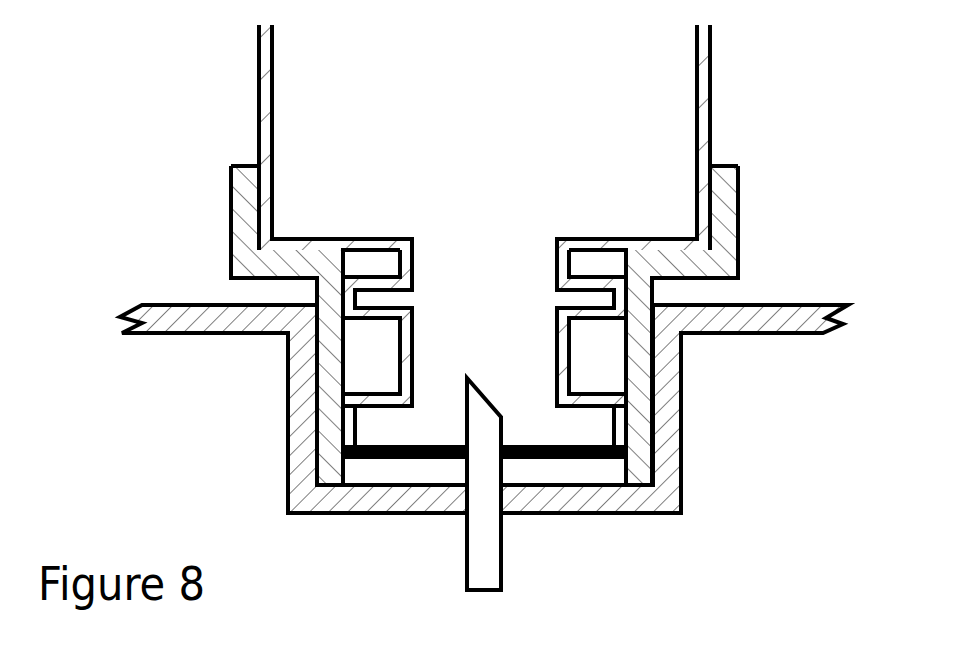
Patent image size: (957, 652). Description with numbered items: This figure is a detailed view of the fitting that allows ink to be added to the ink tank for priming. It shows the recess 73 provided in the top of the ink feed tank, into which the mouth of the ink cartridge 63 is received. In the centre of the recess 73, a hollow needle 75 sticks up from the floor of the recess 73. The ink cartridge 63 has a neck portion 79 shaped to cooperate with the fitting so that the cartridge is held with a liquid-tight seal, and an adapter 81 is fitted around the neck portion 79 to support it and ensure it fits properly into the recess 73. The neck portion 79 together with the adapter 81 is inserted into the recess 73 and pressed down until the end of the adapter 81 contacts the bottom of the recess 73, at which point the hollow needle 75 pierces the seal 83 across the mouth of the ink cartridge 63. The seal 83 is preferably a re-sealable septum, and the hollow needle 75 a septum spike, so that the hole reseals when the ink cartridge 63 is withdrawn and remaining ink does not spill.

The ink cartridge 63 is at (258, 80).
The recess 73 is at (288, 417).
The hollow needle 75 is at (467, 557).
The neck portion 79 is at (568, 362).
The adapter 81 is at (737, 193).
The seal 83 is at (553, 462).